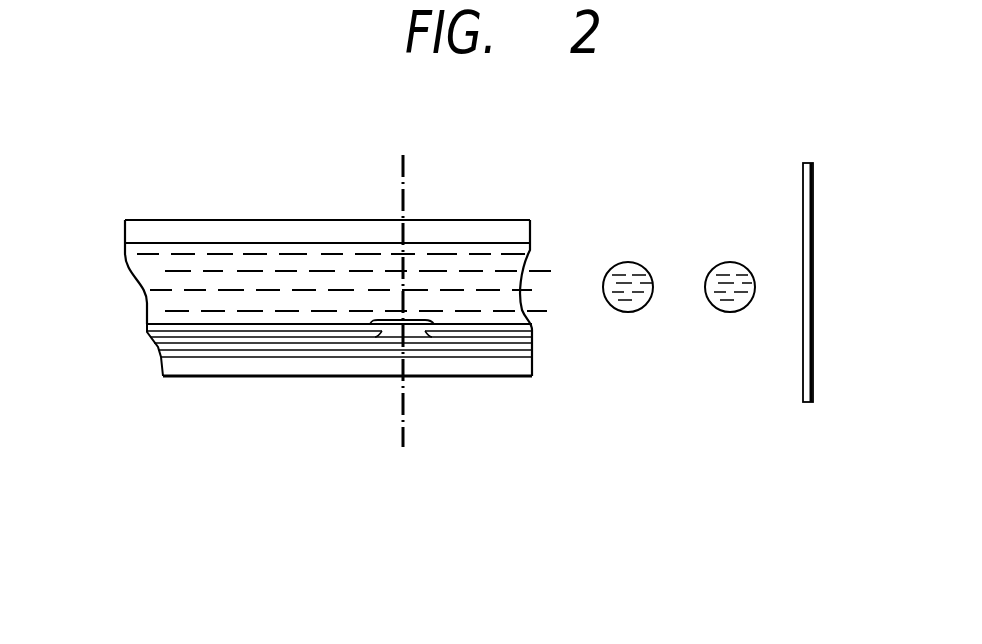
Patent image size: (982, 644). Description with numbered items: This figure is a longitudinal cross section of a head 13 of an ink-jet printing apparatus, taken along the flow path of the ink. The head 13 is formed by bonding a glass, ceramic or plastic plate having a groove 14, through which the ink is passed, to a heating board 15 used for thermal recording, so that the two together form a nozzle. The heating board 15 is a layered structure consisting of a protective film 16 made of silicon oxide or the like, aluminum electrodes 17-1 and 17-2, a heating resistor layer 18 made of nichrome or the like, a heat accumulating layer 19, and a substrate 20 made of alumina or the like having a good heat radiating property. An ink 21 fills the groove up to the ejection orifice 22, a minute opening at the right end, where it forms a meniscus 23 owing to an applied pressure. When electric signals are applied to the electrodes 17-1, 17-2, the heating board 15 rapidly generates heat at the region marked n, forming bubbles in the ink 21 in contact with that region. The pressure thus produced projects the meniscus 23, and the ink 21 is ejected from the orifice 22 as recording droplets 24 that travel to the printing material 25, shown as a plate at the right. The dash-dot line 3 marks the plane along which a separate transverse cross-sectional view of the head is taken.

The head 13 is at (252, 220).
The ink 21 is at (165, 250).
The groove 14 is at (315, 243).
The heat generating region n is at (396, 318).
The meniscus 23 is at (522, 290).
The ejection orifice 22 is at (530, 306).
The heating board 15 is at (123, 322).
The protective film 16 is at (186, 330).
The aluminum electrode 17-1 is at (244, 336).
The heating resistor layer 18 is at (320, 343).
The heat accumulating layer 19 is at (366, 350).
The substrate 20 is at (454, 370).
The aluminum electrode 17-2 is at (501, 338).
The line 3-3' 3 is at (406, 308).
The recording droplets 24 is at (757, 260).
The printing material 25 is at (803, 230).